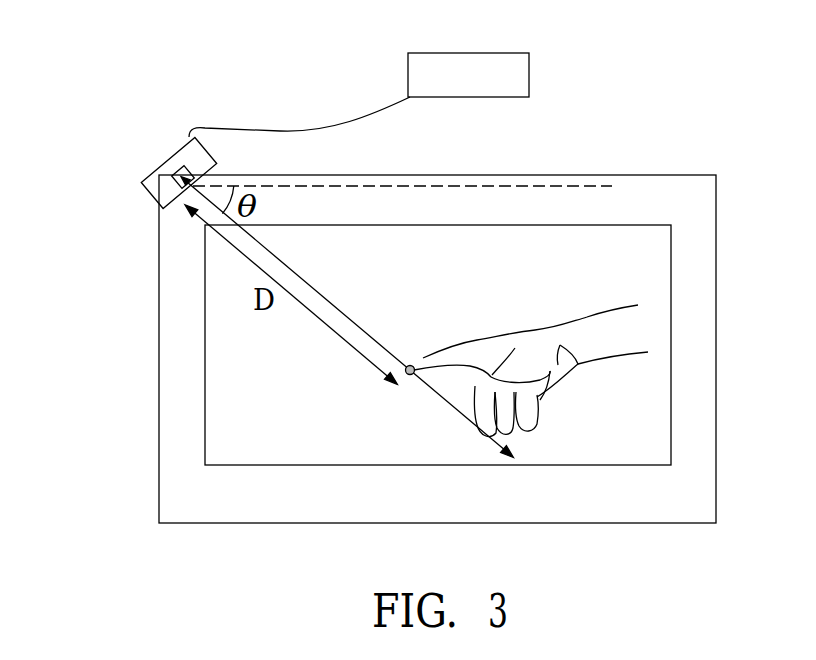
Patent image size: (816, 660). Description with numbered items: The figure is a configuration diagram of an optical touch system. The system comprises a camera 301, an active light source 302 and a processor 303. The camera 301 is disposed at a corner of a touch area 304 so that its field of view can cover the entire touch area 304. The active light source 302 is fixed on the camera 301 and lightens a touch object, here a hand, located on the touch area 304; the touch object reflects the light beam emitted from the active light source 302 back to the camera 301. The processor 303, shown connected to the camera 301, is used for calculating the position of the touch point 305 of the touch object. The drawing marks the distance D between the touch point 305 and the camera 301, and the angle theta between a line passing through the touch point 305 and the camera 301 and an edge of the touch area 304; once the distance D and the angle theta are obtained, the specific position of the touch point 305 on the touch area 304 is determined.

The camera 301 is at (170, 158).
The active light source 302 is at (174, 175).
The processor 303 is at (408, 76).
The touch area 304 is at (300, 423).
The touch point 305 is at (410, 364).